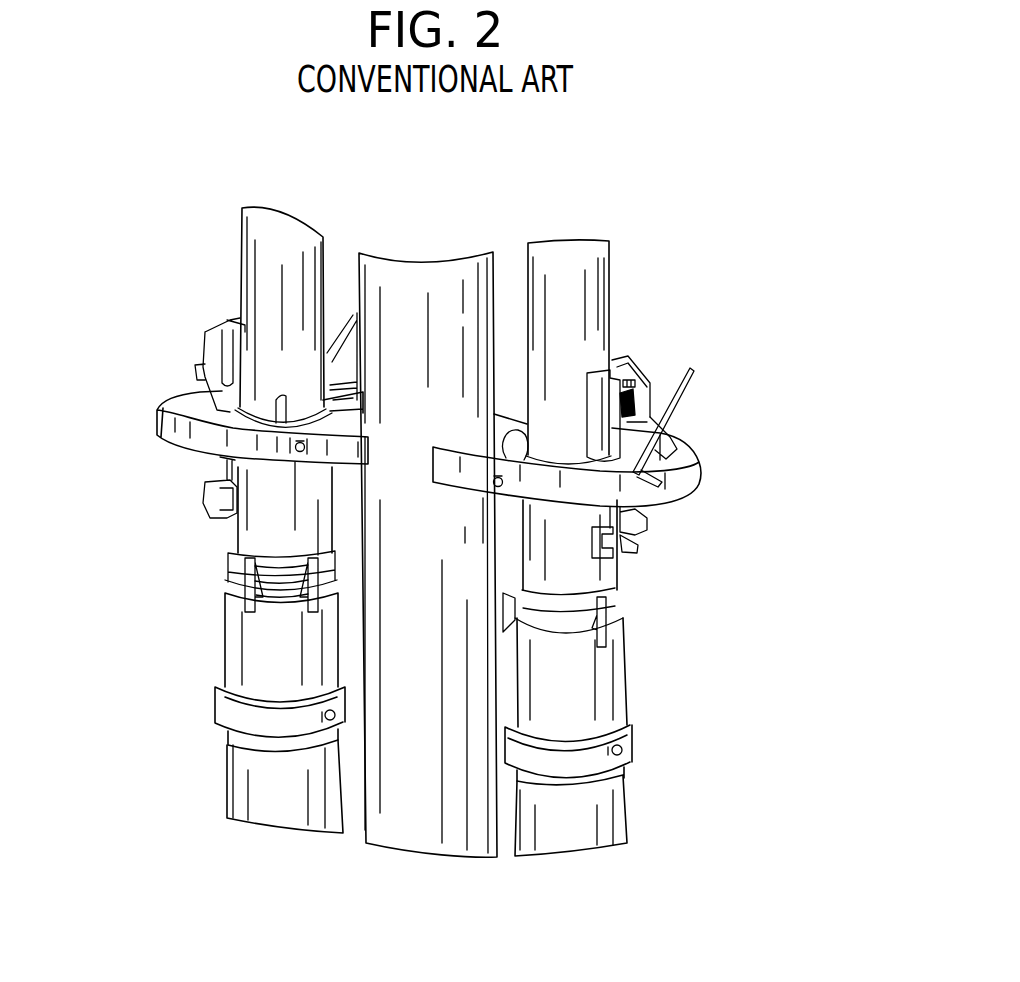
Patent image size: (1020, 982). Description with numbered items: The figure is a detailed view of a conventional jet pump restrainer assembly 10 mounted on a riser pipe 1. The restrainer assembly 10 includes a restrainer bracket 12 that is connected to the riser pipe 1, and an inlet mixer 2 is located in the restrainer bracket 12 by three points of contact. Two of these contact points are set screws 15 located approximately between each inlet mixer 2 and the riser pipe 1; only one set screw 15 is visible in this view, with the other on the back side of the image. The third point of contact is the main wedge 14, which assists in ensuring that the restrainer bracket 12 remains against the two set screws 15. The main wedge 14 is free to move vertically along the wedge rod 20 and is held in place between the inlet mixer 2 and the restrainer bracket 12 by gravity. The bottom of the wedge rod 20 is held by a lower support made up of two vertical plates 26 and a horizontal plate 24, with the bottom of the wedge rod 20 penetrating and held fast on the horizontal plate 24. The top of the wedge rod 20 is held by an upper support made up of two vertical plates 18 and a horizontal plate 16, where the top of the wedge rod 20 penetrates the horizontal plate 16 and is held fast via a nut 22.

The riser pipe 1 is at (408, 278).
The inlet mixer 2 is at (282, 226).
The restrainer assembly 10 is at (150, 310).
The restrainer bracket 12 is at (698, 476).
The main wedge 14 is at (688, 455).
The set screw 15 is at (498, 485).
The horizontal plate 16 is at (636, 381).
The vertical plates 18 is at (602, 427).
The wedge rod 20 is at (640, 398).
The nut 22 is at (620, 381).
The horizontal plate 24 is at (637, 543).
The vertical plates 26 is at (617, 551).